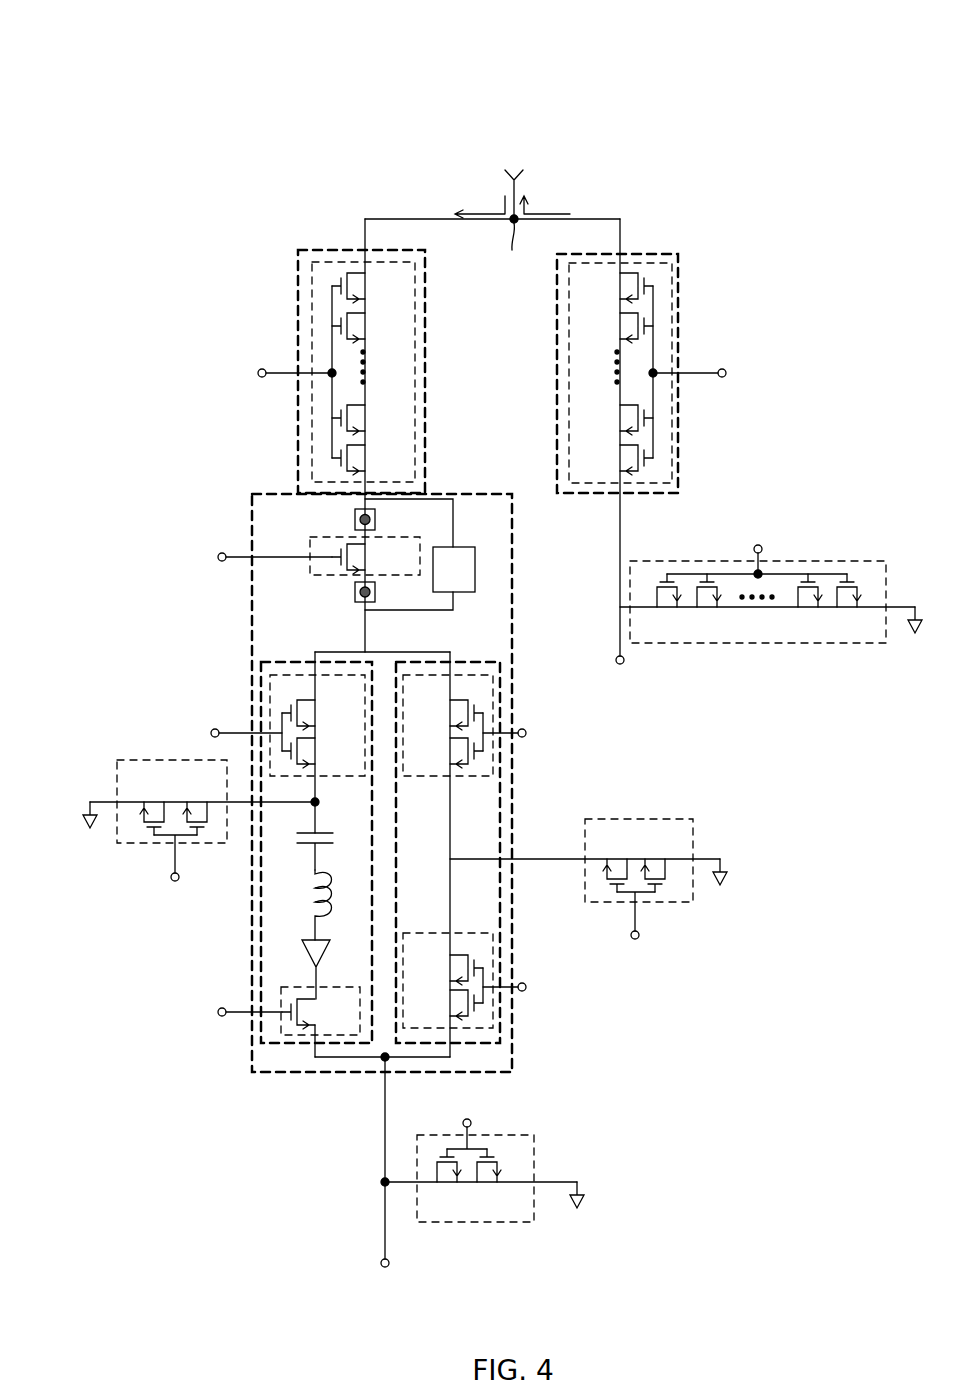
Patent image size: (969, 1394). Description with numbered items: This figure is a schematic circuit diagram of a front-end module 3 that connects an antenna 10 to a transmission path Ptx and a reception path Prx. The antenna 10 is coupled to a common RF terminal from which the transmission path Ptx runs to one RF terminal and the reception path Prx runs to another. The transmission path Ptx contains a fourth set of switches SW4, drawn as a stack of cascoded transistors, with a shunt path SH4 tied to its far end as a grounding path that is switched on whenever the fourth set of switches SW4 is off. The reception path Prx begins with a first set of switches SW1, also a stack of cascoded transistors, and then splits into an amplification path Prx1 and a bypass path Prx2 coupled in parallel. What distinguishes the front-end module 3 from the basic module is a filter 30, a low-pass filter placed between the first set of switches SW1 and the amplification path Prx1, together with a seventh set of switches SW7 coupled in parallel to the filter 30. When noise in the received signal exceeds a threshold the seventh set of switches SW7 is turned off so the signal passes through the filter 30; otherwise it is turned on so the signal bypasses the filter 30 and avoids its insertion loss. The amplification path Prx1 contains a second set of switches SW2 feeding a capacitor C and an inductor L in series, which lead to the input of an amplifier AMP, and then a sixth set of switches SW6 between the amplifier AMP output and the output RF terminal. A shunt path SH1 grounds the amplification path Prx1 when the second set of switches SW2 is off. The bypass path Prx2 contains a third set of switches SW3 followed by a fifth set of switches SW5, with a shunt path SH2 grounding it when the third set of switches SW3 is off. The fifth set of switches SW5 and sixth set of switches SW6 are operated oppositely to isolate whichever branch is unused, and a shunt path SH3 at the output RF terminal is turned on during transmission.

The front-end module 3 is at (757, 100).
The antenna 10 is at (514, 176).
The filter 30 is at (466, 586).
The reception path Prx is at (316, 232).
The transmission path Ptx is at (651, 232).
The amplification path Prx1 is at (301, 661).
The bypass path Prx2 is at (495, 661).
The first set of switches SW1 is at (300, 288).
The second set of switches SW2 is at (268, 700).
The third set of switches SW3 is at (496, 697).
The fourth set of switches SW4 is at (679, 286).
The fifth set of switches SW5 is at (496, 960).
The sixth set of switches SW6 is at (305, 1044).
The seventh set of switches SW7 is at (345, 536).
The shunt path SH1 is at (120, 760).
The shunt path SH2 is at (640, 819).
The shunt path SH3 is at (535, 1150).
The shunt path SH4 is at (845, 560).
The capacitor C is at (327, 848).
The inductor L is at (328, 905).
The amplifier AMP is at (302, 955).